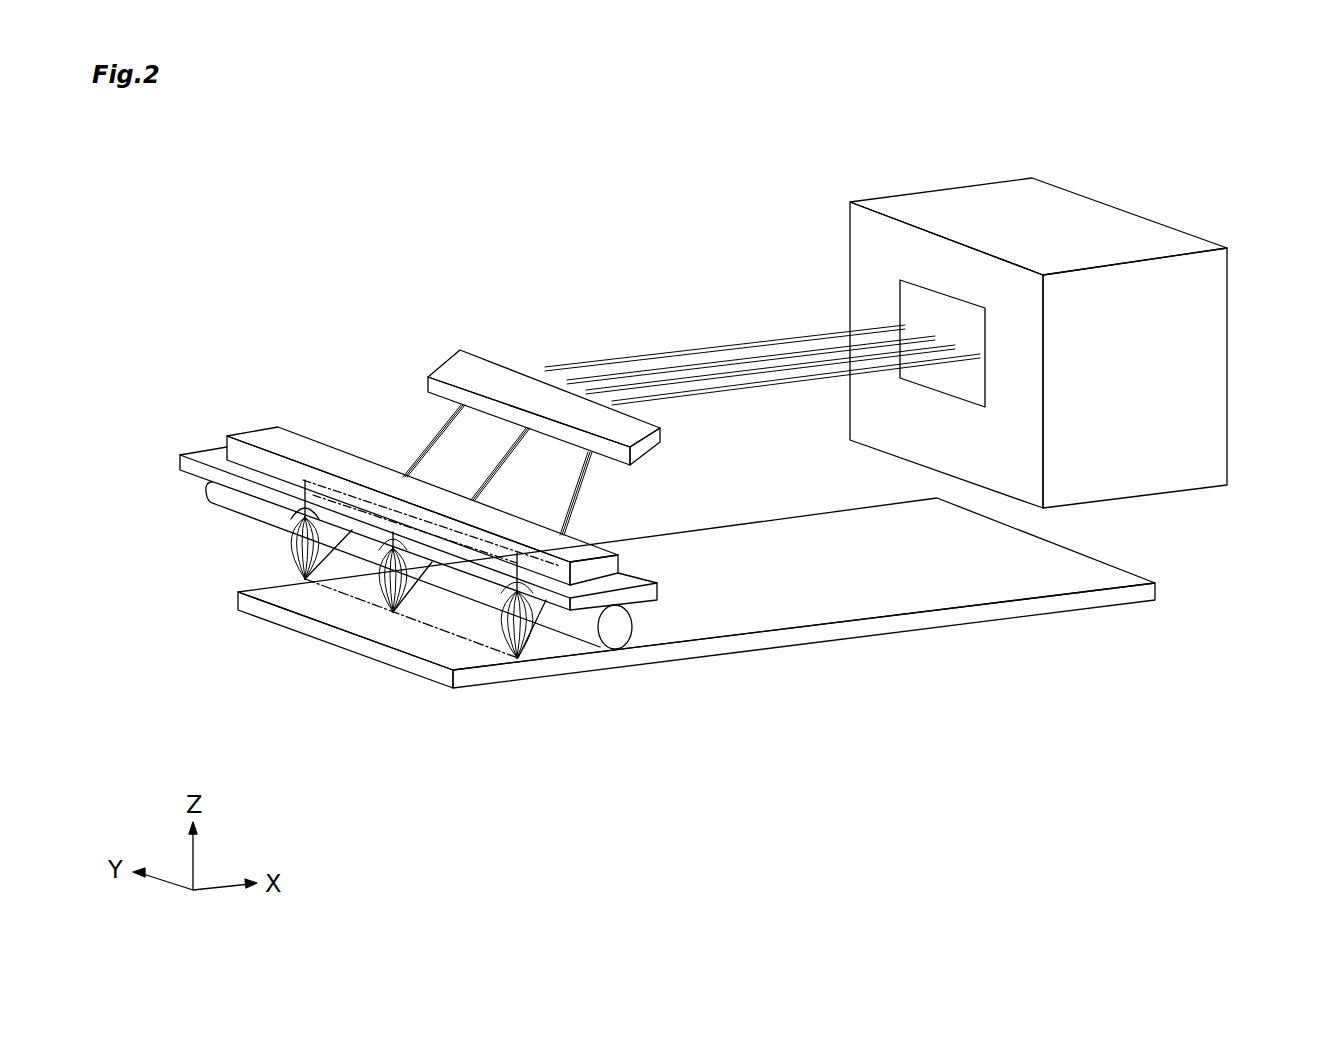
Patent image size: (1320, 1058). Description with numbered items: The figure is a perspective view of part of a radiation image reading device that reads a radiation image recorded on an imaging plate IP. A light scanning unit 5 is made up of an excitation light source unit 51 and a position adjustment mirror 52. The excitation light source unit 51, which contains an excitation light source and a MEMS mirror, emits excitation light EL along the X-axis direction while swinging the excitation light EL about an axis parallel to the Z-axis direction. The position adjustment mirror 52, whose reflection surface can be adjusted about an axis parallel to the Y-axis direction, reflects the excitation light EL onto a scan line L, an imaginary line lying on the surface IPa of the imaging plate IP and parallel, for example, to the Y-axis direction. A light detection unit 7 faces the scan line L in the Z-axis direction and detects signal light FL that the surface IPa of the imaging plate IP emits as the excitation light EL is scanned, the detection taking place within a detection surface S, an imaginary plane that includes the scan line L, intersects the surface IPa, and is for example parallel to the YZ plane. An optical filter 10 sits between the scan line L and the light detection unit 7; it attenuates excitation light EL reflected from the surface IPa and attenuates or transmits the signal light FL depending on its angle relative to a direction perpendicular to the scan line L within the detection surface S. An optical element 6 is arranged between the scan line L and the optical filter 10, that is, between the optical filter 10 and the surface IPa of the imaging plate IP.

The light scanning unit 5 is at (1238, 352).
The excitation light source unit 51 is at (1065, 216).
The position adjustment mirror 52 is at (472, 345).
The excitation light EL is at (567, 503).
The light detection unit 7 is at (276, 427).
The optical filter 10 is at (212, 447).
The optical element 6 is at (205, 489).
The detection surface S is at (293, 504).
The signal light FL is at (380, 582).
The scan line L is at (435, 630).
The imaging plate IP is at (483, 688).
The surface of the imaging plate IPa is at (818, 590).